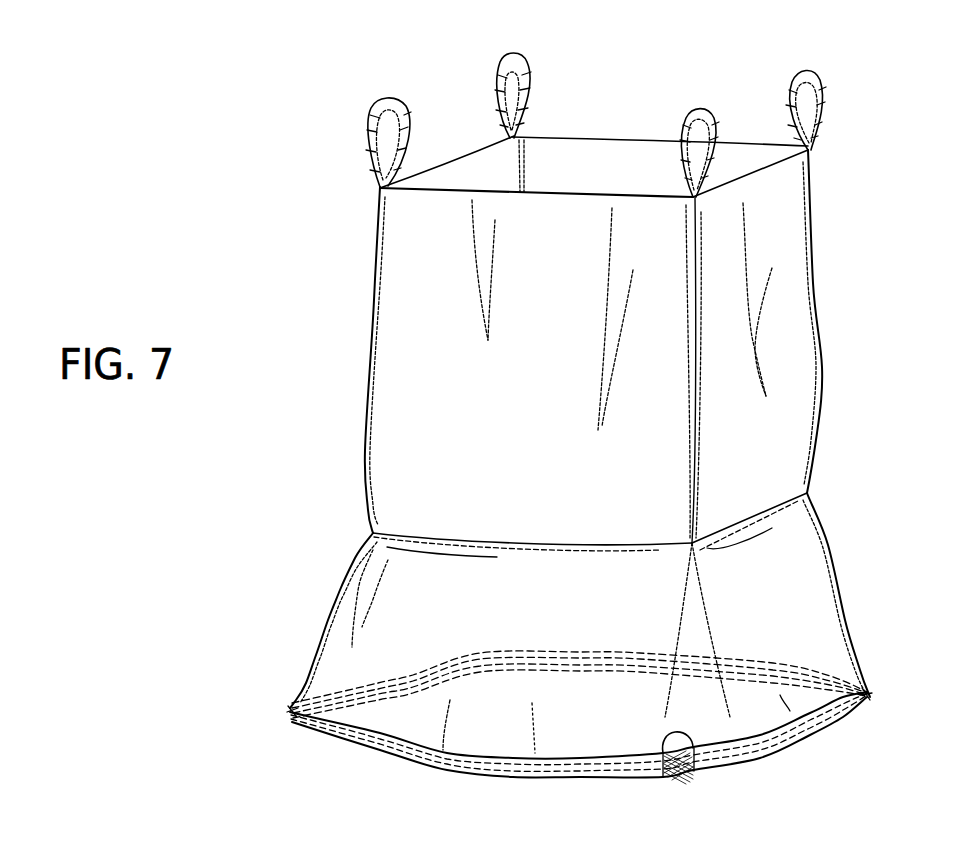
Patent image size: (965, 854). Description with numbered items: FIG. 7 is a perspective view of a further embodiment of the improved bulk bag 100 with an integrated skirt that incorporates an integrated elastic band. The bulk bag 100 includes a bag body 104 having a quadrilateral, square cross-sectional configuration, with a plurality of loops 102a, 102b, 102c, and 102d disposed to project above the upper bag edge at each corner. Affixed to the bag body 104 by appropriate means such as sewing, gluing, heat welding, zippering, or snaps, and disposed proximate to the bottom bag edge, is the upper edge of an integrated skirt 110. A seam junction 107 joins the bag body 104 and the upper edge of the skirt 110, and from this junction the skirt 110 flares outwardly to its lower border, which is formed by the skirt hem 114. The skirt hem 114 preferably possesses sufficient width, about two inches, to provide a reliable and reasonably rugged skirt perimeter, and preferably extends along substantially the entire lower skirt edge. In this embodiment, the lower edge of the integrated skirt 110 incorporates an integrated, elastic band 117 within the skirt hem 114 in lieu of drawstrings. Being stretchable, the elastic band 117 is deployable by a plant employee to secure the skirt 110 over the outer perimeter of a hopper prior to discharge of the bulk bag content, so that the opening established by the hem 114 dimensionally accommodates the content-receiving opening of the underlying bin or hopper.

The improved bulk bag 100 is at (185, 171).
The loop 102a is at (367, 128).
The loop 102b is at (495, 83).
The loop 102c is at (715, 117).
The loop 102d is at (817, 88).
The bag body 104 is at (790, 297).
The seam junction 107 is at (810, 487).
The integrated skirt 110 is at (327, 620).
The skirt hem 114 is at (552, 652).
The elastic band 117 is at (680, 766).